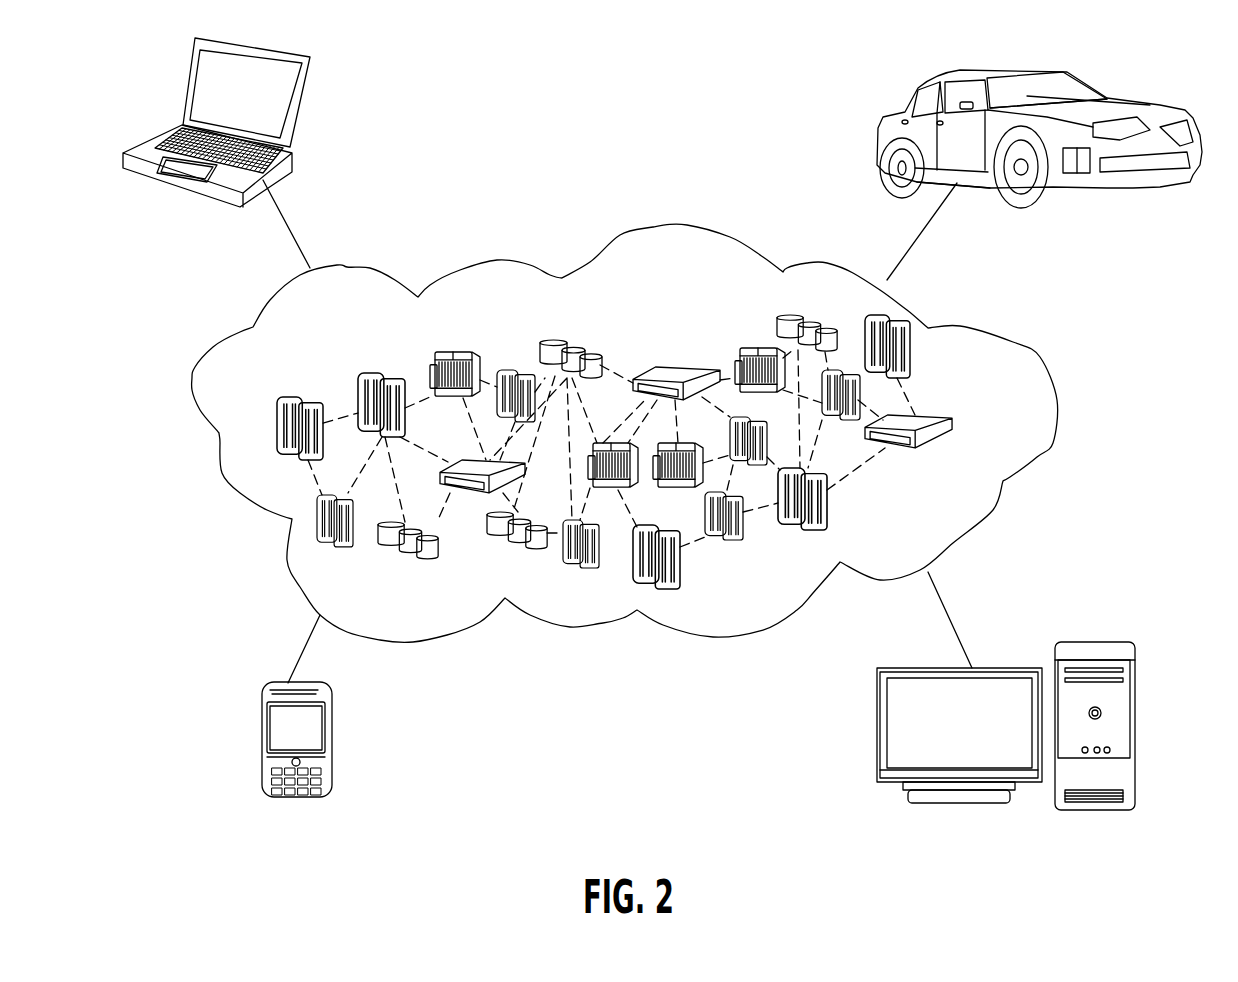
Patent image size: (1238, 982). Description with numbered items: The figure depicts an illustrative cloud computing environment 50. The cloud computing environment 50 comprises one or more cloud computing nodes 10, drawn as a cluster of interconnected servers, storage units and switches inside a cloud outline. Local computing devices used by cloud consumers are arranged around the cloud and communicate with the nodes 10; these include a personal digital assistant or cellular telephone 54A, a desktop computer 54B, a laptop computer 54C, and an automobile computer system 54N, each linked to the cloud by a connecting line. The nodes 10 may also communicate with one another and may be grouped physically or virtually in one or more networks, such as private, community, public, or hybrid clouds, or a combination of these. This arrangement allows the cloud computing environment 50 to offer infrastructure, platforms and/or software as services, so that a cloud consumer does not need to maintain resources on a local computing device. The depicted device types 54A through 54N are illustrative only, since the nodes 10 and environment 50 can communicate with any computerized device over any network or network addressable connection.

The cloud computing nodes 10 is at (992, 428).
The cloud computing environment 50 is at (1013, 342).
The personal digital assistant (PDA) or cellular telephone 54A is at (262, 743).
The desktop computer 54B is at (1098, 640).
The laptop computer 54C is at (302, 107).
The automobile computer system 54N is at (885, 115).